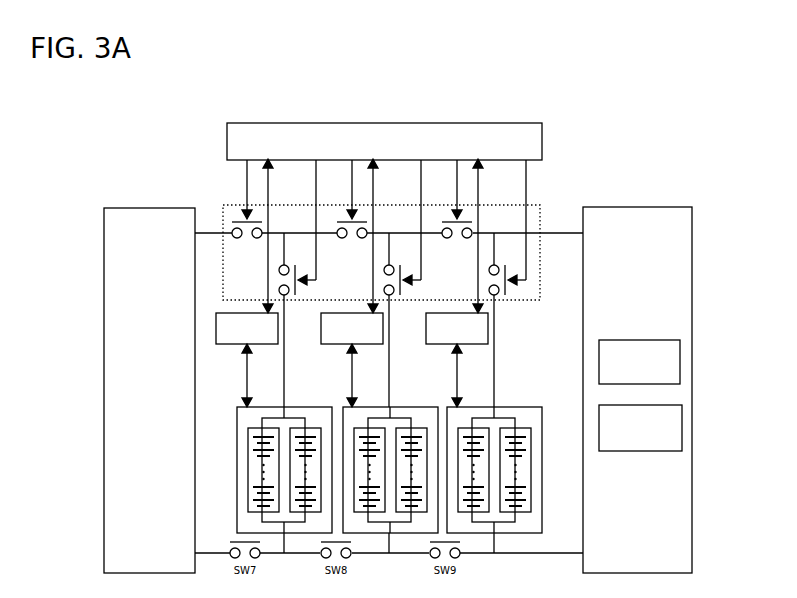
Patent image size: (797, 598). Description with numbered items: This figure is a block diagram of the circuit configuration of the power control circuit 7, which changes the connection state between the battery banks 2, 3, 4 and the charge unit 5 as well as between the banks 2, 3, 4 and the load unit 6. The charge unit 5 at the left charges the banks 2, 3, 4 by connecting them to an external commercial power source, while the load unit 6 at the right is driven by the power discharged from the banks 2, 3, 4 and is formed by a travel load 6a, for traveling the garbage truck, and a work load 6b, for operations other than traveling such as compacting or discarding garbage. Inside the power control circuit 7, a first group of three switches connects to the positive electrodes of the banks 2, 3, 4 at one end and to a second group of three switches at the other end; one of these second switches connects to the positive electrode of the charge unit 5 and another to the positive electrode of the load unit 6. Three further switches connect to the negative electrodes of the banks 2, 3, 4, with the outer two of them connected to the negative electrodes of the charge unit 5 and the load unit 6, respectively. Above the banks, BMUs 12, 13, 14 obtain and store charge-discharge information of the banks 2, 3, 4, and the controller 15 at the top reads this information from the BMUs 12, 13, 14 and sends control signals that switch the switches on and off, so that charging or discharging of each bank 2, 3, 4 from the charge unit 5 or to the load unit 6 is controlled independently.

The bank 2 is at (305, 407).
The bank 3 is at (411, 407).
The bank 4 is at (516, 407).
The charge unit 5 is at (193, 208).
The load unit 6 is at (683, 207).
The travel load 6a is at (680, 348).
The work load 6b is at (682, 418).
The power control circuit 7 is at (540, 205).
The BMU 12 is at (278, 330).
The BMU 13 is at (383, 330).
The BMU 14 is at (488, 330).
The controller 15 is at (518, 123).